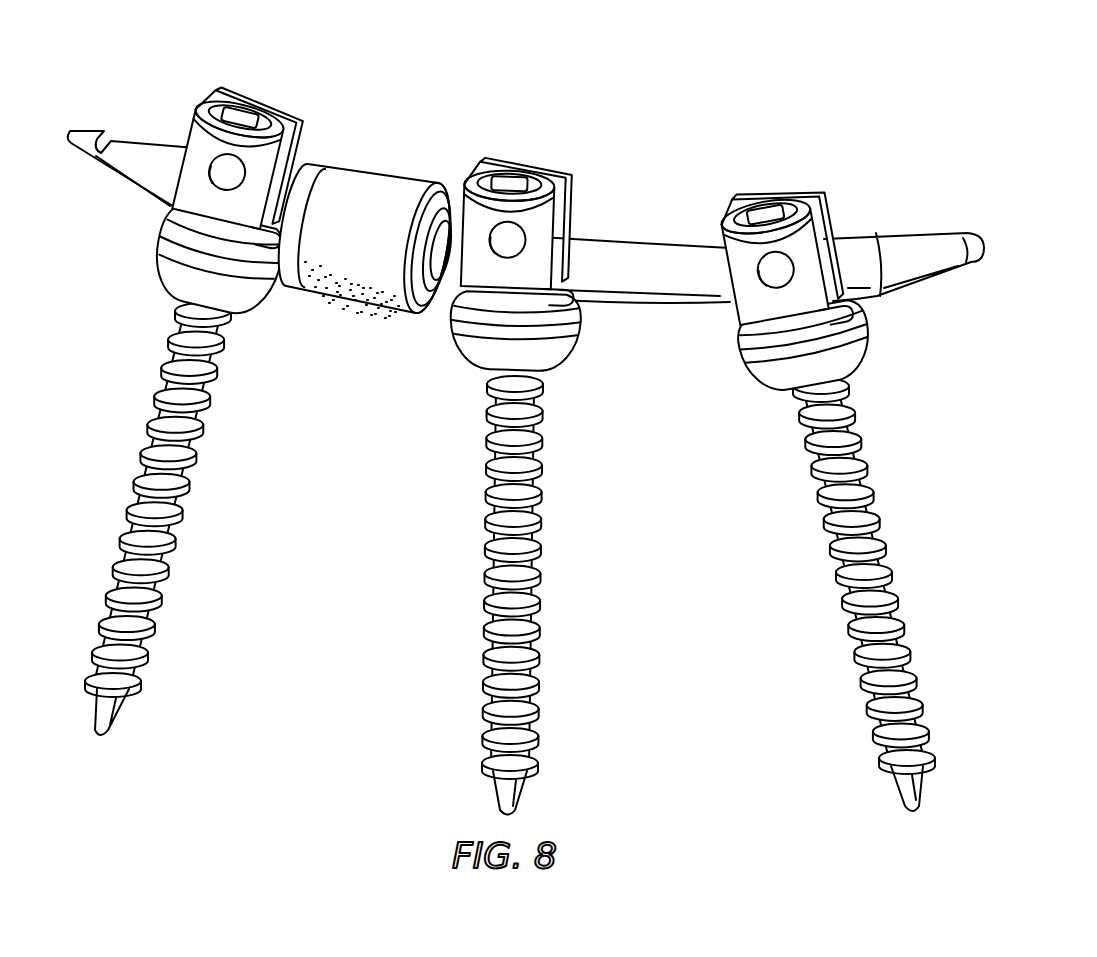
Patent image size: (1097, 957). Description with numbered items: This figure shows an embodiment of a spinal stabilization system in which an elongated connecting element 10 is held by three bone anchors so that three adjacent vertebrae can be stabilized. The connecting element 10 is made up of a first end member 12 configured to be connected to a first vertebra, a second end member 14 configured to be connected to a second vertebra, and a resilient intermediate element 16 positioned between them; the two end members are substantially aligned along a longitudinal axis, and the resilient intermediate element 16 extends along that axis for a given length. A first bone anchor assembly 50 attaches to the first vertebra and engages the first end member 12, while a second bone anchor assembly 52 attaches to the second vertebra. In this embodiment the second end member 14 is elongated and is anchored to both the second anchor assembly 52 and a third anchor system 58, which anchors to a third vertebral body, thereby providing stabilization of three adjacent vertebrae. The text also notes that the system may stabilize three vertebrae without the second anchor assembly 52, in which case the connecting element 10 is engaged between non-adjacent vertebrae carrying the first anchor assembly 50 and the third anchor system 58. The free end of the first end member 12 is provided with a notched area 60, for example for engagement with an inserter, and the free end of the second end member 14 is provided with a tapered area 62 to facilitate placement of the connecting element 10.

The elongated connecting element 10 is at (1010, 226).
The first end member 12 is at (141, 196).
The second end member 14 is at (638, 243).
The resilient intermediate element 16 is at (384, 169).
The first bone anchor assembly 50 is at (140, 404).
The second bone anchor assembly 52 is at (475, 458).
The third anchor system 58 is at (868, 404).
The notched area 60 is at (138, 117).
The tapered area 62 is at (910, 205).